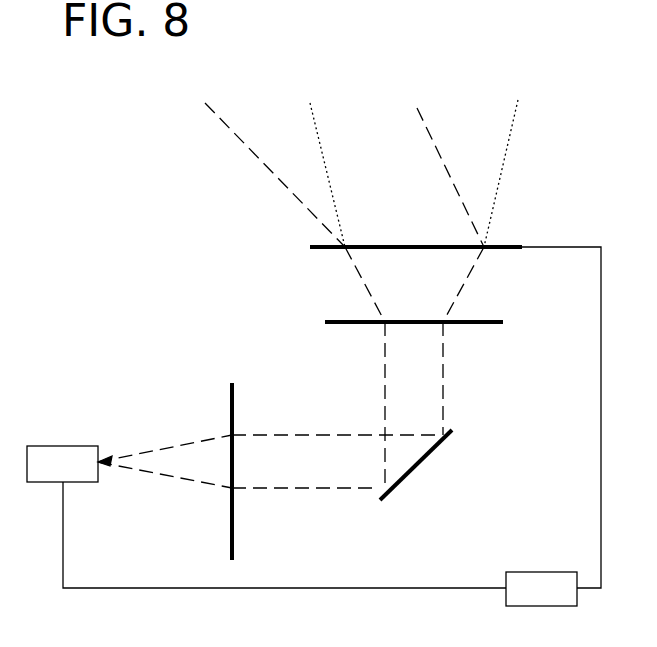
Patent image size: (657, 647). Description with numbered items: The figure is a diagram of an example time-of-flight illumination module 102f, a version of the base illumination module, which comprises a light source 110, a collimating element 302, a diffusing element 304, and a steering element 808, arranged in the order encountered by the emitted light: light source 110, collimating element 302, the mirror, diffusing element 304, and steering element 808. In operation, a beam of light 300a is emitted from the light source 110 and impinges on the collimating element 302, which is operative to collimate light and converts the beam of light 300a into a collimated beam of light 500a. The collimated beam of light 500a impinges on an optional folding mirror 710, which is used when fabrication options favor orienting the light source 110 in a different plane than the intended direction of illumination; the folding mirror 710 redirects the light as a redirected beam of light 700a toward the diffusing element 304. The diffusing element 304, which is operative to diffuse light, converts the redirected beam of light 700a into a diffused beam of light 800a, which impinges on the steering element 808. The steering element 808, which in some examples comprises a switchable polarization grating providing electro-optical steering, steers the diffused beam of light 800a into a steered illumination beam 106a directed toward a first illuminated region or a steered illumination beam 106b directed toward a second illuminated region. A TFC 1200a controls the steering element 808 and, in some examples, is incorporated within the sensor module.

The ToF illumination module 102f is at (67, 237).
The steered illumination beam 106a is at (232, 130).
The steered illumination beam 106b is at (517, 122).
The steering element 808 is at (315, 247).
The diffused beam of light 800a is at (414, 284).
The diffusing element 304 is at (328, 322).
The redirected beam of light 700a is at (414, 406).
The folding mirror 710 is at (445, 433).
The collimating element 302 is at (237, 395).
The beam of light 300a is at (172, 446).
The collimated beam of light 500a is at (327, 487).
The light source 110 is at (62, 464).
The TFC 1200a is at (541, 589).